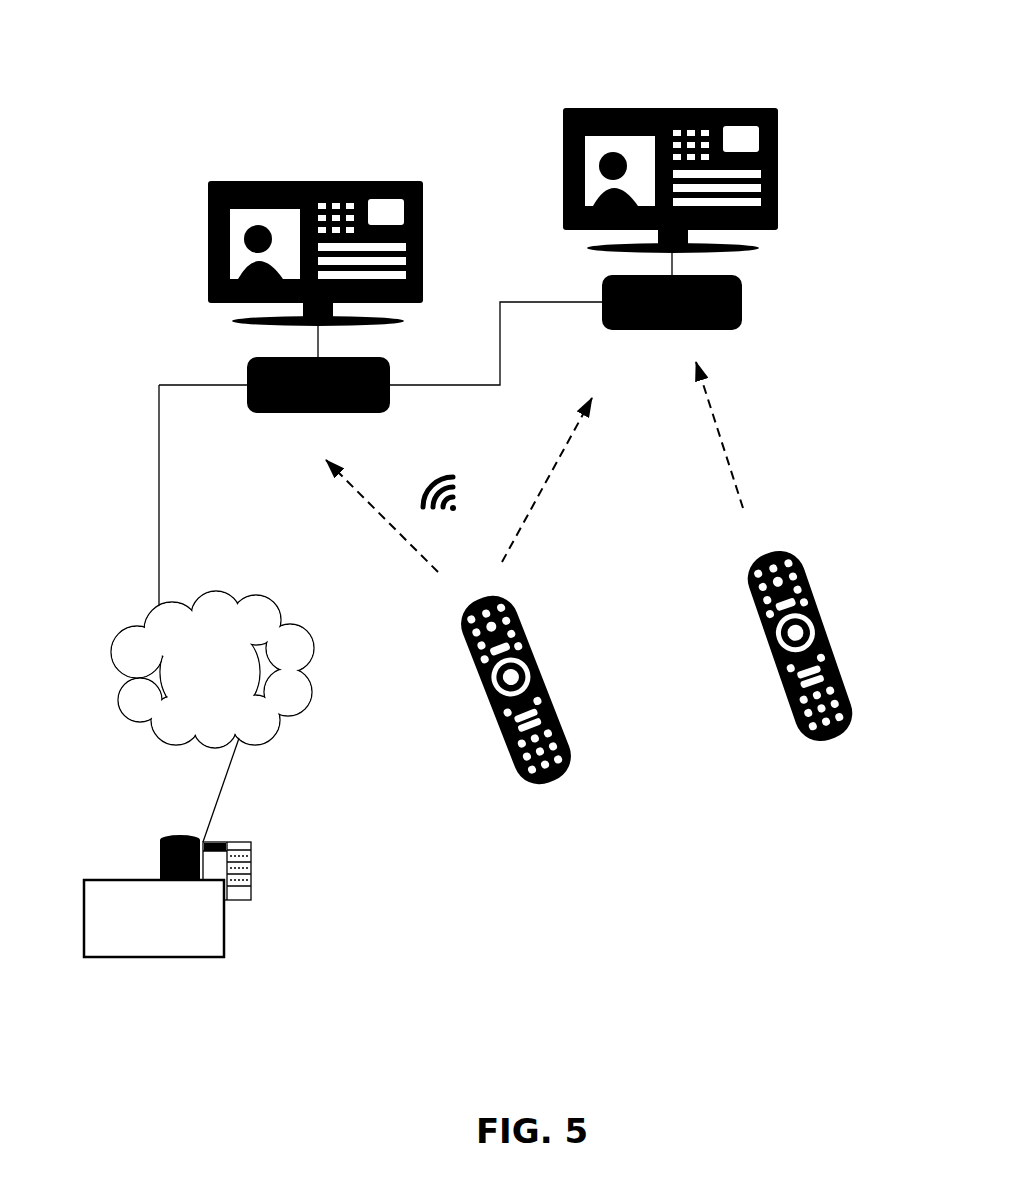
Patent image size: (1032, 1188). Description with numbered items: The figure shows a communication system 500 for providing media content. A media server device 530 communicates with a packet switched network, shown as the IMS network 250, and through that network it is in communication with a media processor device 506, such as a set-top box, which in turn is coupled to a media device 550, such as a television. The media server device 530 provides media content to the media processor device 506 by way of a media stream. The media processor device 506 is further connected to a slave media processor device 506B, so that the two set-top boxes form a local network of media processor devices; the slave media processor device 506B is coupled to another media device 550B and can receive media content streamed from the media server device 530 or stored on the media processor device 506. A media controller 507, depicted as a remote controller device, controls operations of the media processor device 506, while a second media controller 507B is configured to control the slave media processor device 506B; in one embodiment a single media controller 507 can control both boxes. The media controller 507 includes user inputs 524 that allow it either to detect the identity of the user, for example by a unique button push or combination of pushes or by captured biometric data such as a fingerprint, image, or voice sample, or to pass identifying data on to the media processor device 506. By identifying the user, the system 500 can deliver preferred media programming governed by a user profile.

The communication system 500 is at (514, 1108).
The media device 550 is at (377, 186).
The media device 550B is at (718, 112).
The media processor device 506 is at (247, 363).
The slave media processor device 506B is at (744, 290).
The user inputs 524 is at (452, 483).
The media controller 507 is at (489, 694).
The media controller 507B is at (820, 740).
The IMS network 250 is at (183, 734).
The media server device 530 is at (227, 938).